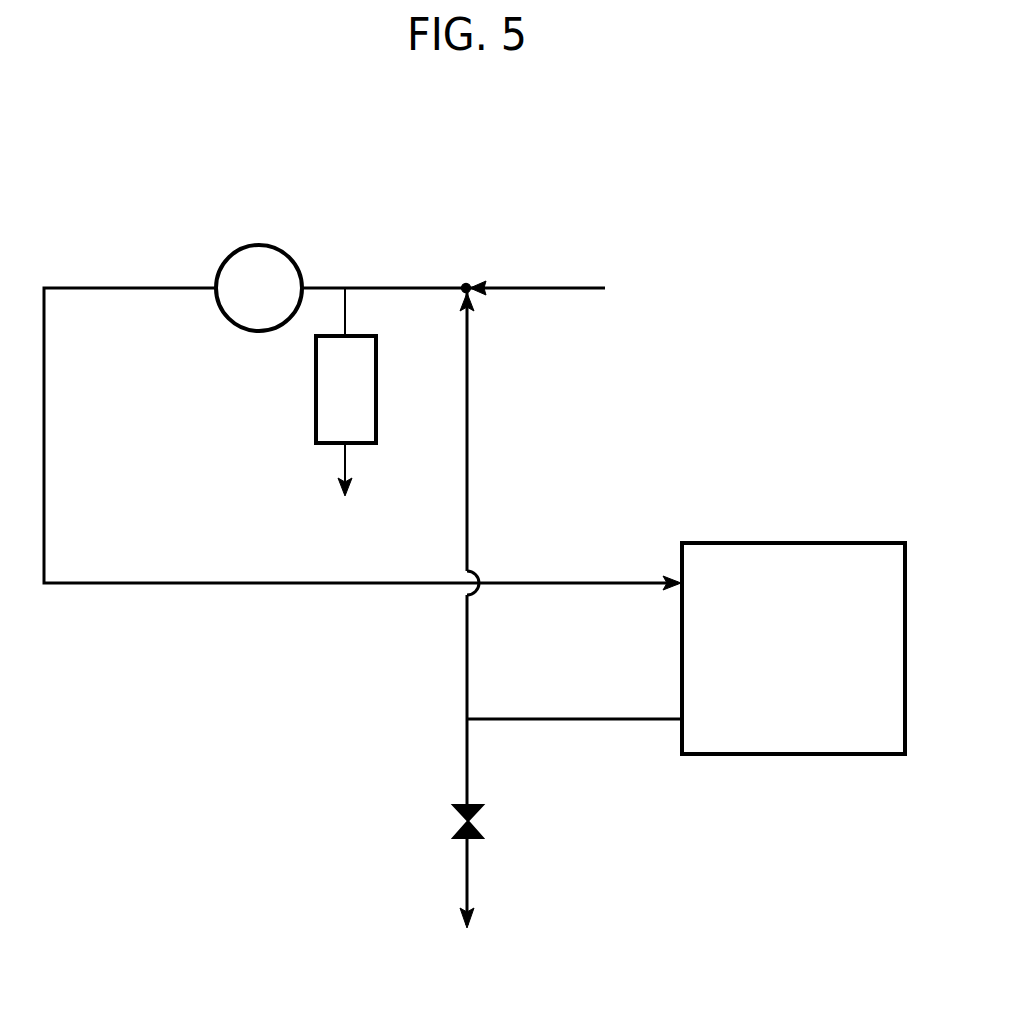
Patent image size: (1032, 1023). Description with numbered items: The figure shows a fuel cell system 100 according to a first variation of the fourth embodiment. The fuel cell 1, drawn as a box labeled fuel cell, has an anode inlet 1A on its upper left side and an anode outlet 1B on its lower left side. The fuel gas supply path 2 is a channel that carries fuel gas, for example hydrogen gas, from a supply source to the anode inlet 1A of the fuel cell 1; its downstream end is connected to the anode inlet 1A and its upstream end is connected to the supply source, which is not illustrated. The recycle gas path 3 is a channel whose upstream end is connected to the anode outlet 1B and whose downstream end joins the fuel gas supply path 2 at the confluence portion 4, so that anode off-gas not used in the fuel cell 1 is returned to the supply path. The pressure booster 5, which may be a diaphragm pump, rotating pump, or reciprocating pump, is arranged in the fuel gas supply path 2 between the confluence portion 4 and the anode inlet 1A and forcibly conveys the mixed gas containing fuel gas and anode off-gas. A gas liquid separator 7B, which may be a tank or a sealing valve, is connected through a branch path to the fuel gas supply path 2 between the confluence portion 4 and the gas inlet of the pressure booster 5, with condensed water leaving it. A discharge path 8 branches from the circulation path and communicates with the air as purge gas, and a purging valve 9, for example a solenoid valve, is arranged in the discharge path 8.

The fuel cell system 100 is at (615, 170).
The fuel cell 1 is at (794, 543).
The anode inlet 1A is at (684, 579).
The anode outlet 1B is at (684, 719).
The fuel gas supply path 2 is at (138, 585).
The recycle gas path 3 is at (466, 646).
The confluence portion 4 is at (466, 285).
The pressure booster 5 is at (248, 303).
The gas liquid separator 7B is at (325, 408).
The discharge path 8 is at (466, 740).
The purging valve 9 is at (455, 812).